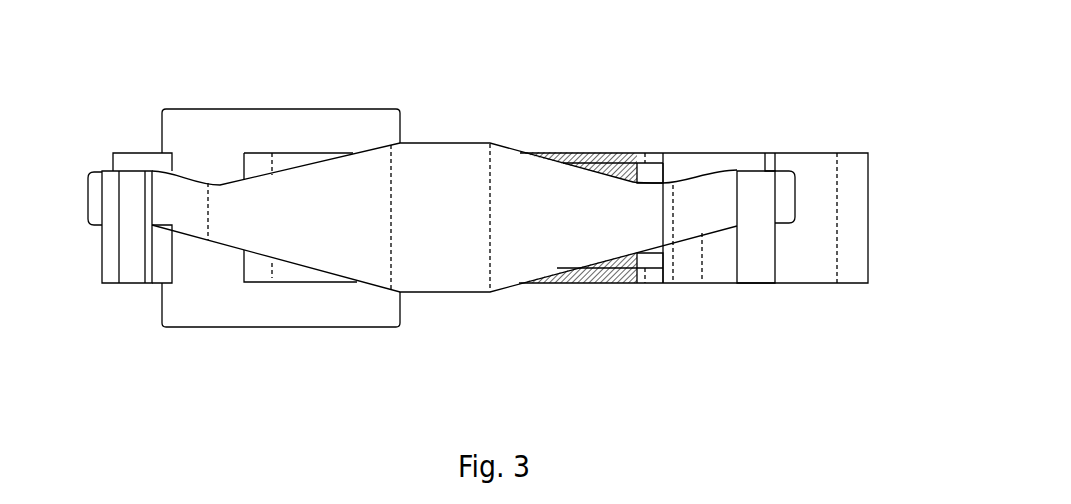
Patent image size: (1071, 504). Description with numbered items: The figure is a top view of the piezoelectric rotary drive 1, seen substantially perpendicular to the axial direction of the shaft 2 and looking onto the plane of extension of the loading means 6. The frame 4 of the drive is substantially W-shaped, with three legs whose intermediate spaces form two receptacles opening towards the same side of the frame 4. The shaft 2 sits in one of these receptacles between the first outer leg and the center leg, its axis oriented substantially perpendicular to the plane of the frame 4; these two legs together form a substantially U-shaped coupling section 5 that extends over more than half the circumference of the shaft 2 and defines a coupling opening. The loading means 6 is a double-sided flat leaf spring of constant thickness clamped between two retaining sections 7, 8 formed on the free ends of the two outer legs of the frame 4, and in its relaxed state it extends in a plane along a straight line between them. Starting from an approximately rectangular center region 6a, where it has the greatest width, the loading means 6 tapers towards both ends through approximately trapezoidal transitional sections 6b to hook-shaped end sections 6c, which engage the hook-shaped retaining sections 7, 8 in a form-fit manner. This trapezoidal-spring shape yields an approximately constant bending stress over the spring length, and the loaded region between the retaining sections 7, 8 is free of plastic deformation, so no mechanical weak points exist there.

The piezoelectric rotary drive 1 is at (505, 108).
The shaft 2 is at (198, 300).
The frame 4 is at (742, 77).
The coupling section 5 is at (142, 333).
The loading means 6 is at (423, 108).
The center region 6a is at (455, 231).
The transitional sections 6b is at (355, 231).
The end sections 6c is at (100, 210).
The retaining section 7 is at (127, 197).
The retaining section 8 is at (762, 190).